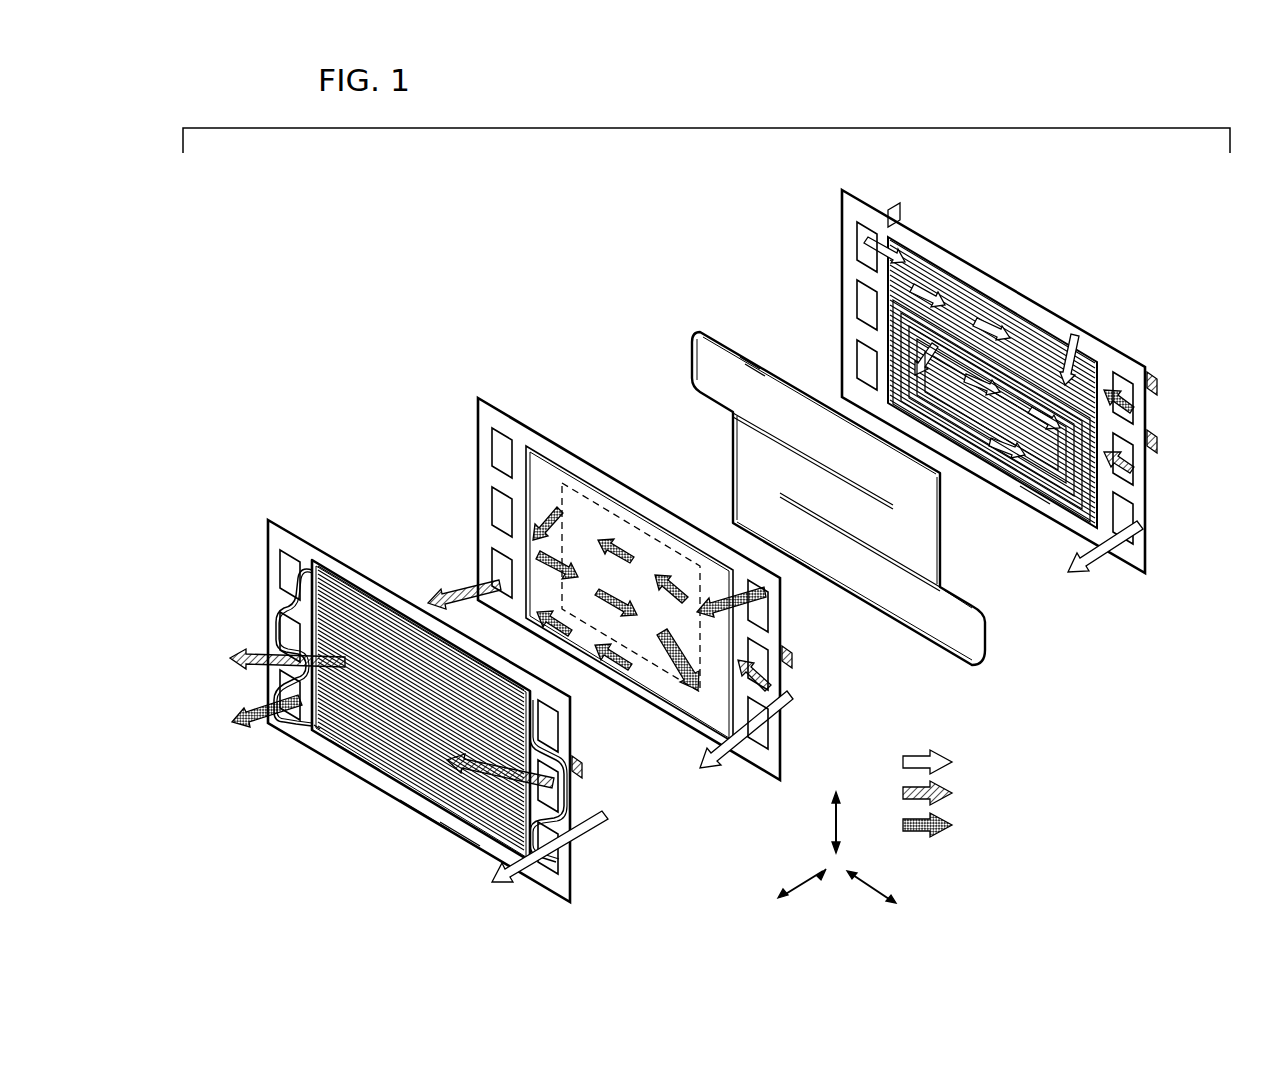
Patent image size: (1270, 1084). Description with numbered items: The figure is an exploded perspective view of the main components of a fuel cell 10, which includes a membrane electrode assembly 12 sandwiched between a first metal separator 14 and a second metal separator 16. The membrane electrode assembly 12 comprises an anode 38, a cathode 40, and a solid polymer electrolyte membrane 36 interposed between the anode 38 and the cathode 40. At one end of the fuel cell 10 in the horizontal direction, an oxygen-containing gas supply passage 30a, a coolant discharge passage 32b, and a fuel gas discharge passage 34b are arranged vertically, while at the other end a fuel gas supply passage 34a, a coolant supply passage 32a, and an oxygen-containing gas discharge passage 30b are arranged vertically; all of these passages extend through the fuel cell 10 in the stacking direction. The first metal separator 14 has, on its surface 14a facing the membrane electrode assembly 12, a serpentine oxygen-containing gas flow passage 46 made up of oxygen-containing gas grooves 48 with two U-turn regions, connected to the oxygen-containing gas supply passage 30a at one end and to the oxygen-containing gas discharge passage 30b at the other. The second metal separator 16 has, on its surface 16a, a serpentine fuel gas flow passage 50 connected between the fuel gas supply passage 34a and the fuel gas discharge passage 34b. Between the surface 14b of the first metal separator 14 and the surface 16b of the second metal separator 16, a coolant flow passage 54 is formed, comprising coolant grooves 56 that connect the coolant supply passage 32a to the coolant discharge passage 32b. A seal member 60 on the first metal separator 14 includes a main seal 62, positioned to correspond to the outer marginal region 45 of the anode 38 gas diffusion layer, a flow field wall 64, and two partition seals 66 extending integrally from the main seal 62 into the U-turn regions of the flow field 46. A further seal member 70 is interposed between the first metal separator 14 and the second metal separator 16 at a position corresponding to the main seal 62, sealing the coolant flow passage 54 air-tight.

The fuel cell 10 is at (580, 310).
The membrane electrode assembly 12 is at (476, 394).
The first metal separator 14 is at (840, 186).
The surface of the first metal separator 14a is at (1000, 488).
The surface of the first metal separator 14b is at (1036, 502).
The second metal separator 16 is at (266, 516).
The surface of the second metal separator 16a is at (462, 835).
The surface of the second metal separator 16b is at (426, 815).
The oxygen-containing gas supply passage 30a is at (287, 577).
The oxygen-containing gas discharge passage 30b is at (559, 858).
The coolant supply passage 32a is at (559, 795).
The coolant discharge passage 32b is at (287, 640).
The fuel gas supply passage 34a is at (559, 732).
The fuel gas discharge passage 34b is at (287, 700).
The solid polymer electrolyte membrane 36 is at (756, 752).
The anode 38 is at (547, 473).
The cathode 40 is at (650, 518).
The outer marginal region 45 is at (676, 705).
The serpentine oxygen-containing gas flow passage 46 is at (965, 285).
The oxygen-containing gas grooves 48 is at (1062, 332).
The serpentine fuel gas flow passage 50 is at (387, 578).
The coolant flow passage 54 is at (350, 585).
The coolant grooves 56 is at (345, 735).
The seal member 60 is at (692, 326).
The main seal 62 is at (751, 360).
The flow field wall 64 is at (754, 371).
The partition seals 66 is at (803, 507).
The seal member 70 is at (366, 762).